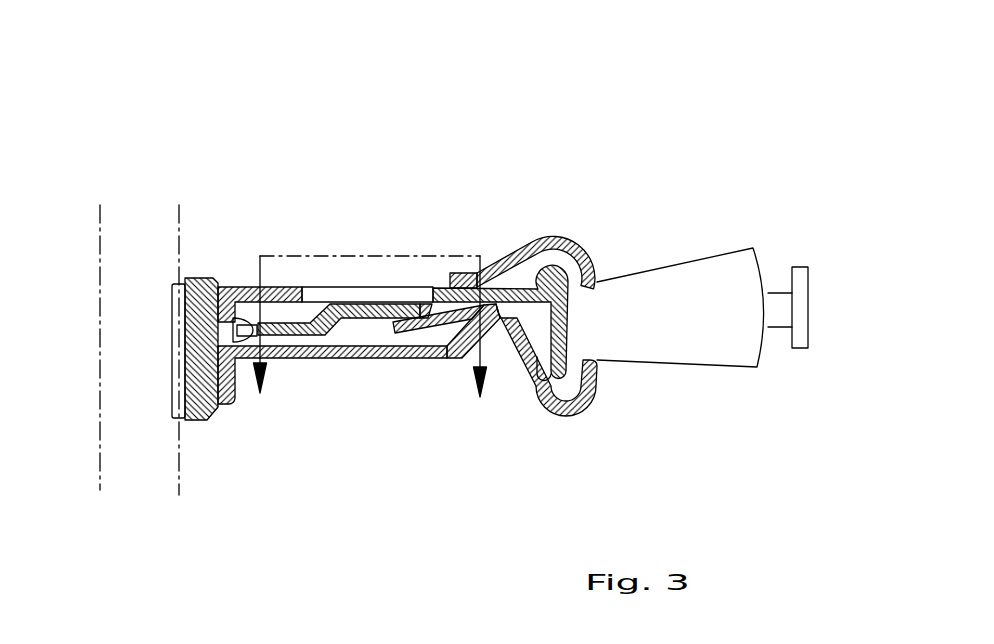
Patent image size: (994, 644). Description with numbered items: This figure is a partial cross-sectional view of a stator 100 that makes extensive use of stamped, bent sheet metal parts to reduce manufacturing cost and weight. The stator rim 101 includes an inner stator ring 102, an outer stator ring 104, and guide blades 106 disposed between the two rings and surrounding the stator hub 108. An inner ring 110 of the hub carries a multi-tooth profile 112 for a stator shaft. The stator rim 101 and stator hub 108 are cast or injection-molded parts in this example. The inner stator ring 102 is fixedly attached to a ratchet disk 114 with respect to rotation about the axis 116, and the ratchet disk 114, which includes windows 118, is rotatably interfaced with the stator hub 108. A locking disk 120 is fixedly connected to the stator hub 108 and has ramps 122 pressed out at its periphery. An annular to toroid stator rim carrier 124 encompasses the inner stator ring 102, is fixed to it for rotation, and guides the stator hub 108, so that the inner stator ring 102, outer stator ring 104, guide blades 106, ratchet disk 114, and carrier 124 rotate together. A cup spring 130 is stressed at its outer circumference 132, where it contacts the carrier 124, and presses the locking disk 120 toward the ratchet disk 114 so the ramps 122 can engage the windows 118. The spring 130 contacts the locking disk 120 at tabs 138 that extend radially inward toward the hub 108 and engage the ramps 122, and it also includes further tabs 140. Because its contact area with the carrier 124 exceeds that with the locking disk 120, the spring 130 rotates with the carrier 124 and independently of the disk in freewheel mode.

The stator 100 is at (576, 92).
The stator rim 101 is at (734, 177).
The inner stator ring 102 is at (567, 390).
The outer stator ring 104 is at (803, 287).
The guide blades 106 is at (668, 292).
The stator hub 108 is at (212, 420).
The inner ring 110 is at (179, 278).
The multi-tooth profile 112 is at (180, 402).
The ratchet disk 114 is at (265, 287).
The axis 116 is at (100, 270).
The windows 118 is at (392, 289).
The locking disk 120 is at (298, 342).
The ramps 122 is at (372, 308).
The stator rim carrier 124 is at (523, 248).
The cup spring 130 is at (442, 350).
The outer circumference 132 is at (521, 333).
The tabs 138 is at (401, 333).
The tabs 140 is at (468, 273).